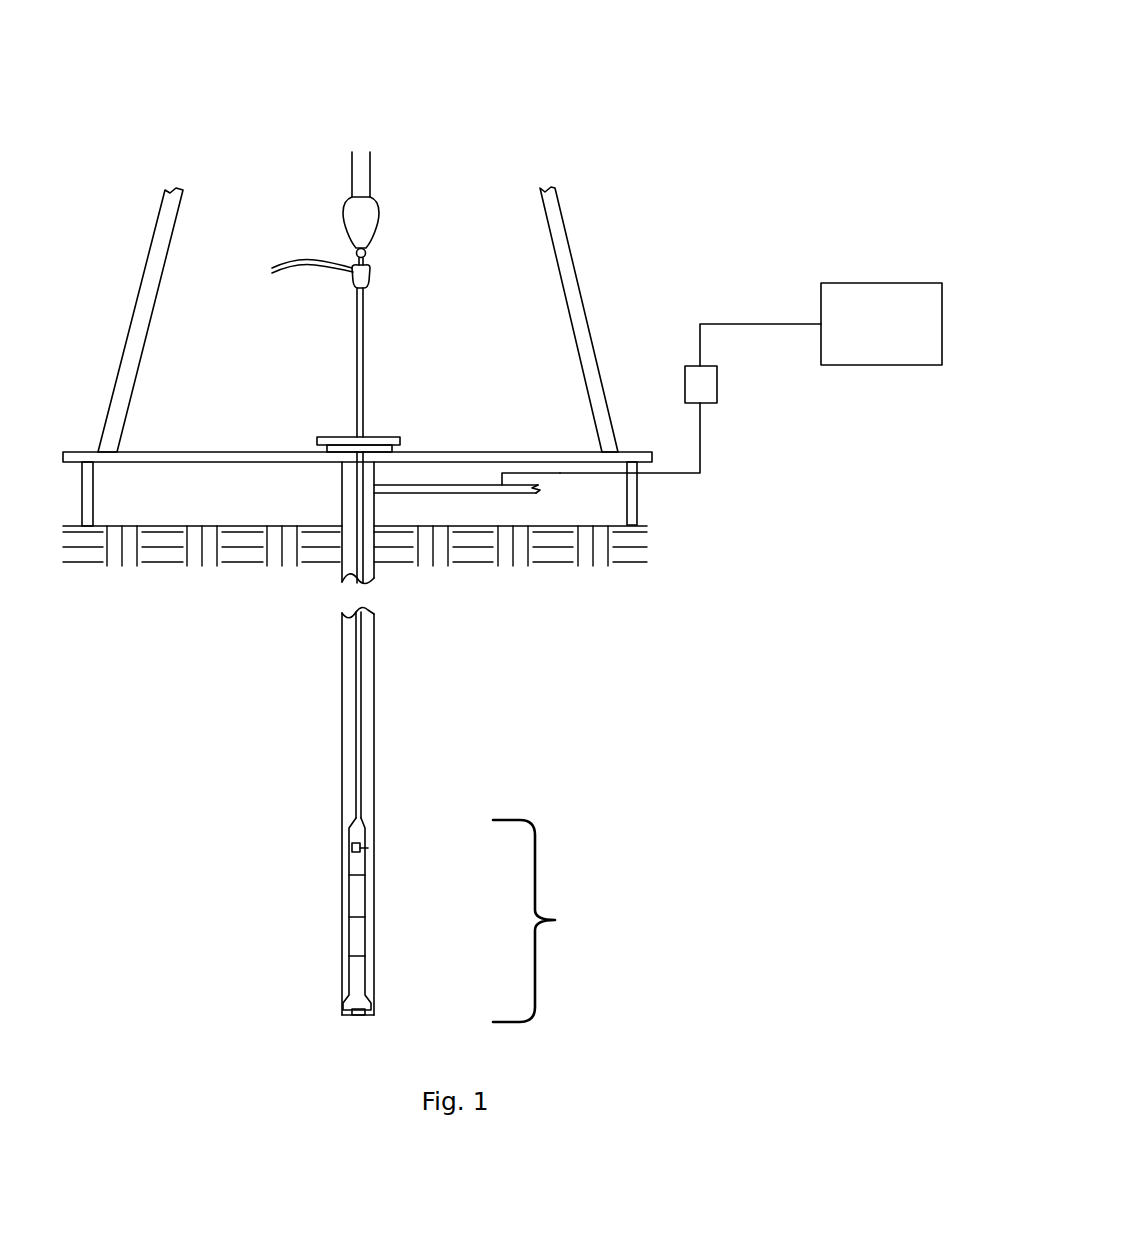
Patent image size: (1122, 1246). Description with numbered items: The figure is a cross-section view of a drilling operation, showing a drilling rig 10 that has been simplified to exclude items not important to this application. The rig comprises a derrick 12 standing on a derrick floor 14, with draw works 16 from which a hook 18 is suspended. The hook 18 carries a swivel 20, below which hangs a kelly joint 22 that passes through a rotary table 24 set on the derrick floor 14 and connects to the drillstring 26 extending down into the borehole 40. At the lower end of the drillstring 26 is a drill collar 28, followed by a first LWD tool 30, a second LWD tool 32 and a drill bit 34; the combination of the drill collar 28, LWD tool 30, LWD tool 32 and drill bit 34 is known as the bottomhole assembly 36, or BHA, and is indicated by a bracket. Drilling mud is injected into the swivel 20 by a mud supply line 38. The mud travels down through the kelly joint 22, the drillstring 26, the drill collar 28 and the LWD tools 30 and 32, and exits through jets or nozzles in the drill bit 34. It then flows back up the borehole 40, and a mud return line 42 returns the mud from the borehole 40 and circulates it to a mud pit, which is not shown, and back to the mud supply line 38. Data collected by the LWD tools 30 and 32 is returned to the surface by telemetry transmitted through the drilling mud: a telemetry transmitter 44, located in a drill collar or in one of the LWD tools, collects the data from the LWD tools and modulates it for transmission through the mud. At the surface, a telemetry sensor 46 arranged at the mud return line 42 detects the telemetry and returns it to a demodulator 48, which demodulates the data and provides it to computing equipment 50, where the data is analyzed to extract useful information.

The drilling rig 10 is at (621, 112).
The derrick 12 is at (563, 250).
The derrick floor 14 is at (555, 453).
The draw works 16 is at (371, 187).
The hook 18 is at (357, 257).
The swivel 20 is at (353, 273).
The kelly joint 22 is at (364, 355).
The rotary table 24 is at (340, 440).
The drillstring 26 is at (356, 705).
The drill collar 28 is at (355, 867).
The LWD tool 30 is at (355, 897).
The LWD tool 32 is at (355, 942).
The drill bit 34 is at (352, 1003).
The bottomhole assembly 36 is at (482, 920).
The mud supply line 38 is at (285, 270).
The borehole 40 is at (375, 708).
The mud return line 42 is at (428, 490).
The telemetry transmitter 44 is at (351, 844).
The telemetry sensor 46 is at (505, 492).
The demodulator 48 is at (695, 380).
The computing equipment 50 is at (887, 317).